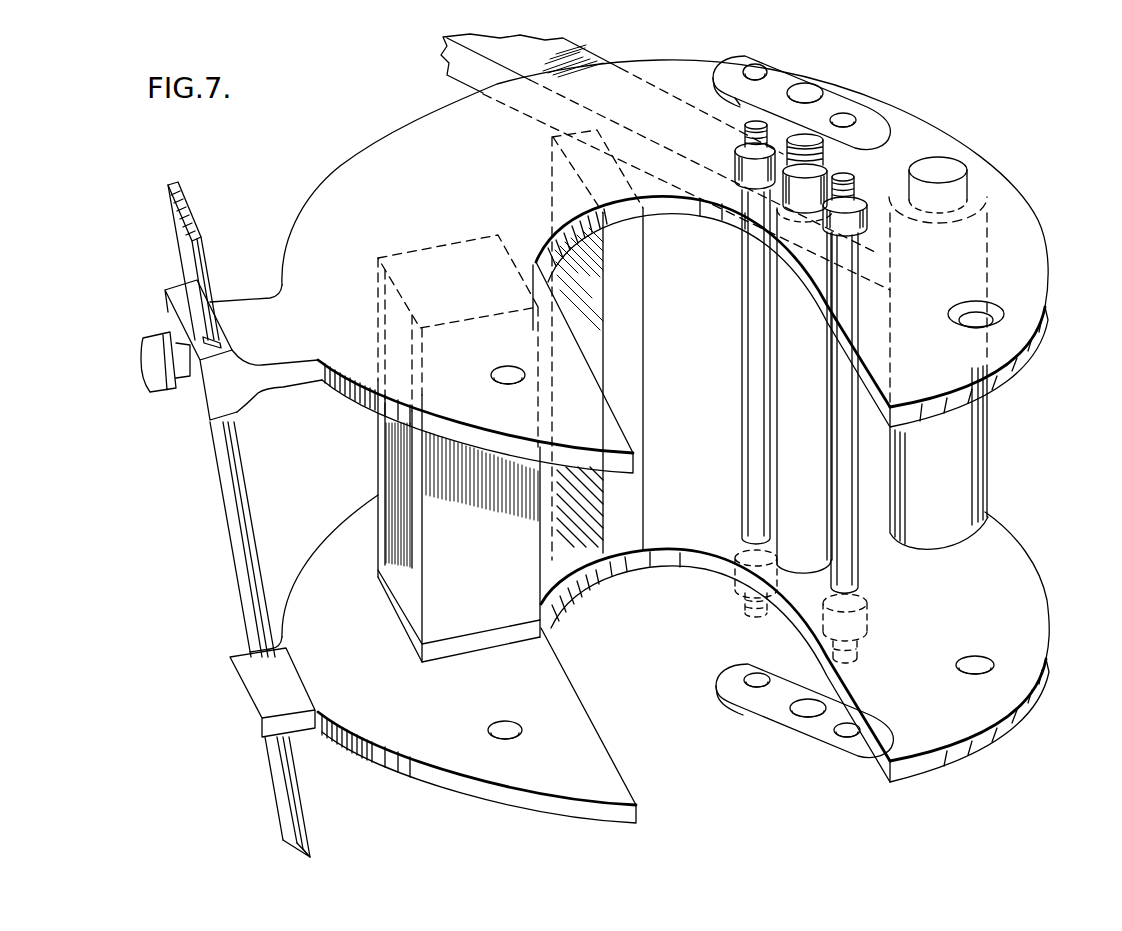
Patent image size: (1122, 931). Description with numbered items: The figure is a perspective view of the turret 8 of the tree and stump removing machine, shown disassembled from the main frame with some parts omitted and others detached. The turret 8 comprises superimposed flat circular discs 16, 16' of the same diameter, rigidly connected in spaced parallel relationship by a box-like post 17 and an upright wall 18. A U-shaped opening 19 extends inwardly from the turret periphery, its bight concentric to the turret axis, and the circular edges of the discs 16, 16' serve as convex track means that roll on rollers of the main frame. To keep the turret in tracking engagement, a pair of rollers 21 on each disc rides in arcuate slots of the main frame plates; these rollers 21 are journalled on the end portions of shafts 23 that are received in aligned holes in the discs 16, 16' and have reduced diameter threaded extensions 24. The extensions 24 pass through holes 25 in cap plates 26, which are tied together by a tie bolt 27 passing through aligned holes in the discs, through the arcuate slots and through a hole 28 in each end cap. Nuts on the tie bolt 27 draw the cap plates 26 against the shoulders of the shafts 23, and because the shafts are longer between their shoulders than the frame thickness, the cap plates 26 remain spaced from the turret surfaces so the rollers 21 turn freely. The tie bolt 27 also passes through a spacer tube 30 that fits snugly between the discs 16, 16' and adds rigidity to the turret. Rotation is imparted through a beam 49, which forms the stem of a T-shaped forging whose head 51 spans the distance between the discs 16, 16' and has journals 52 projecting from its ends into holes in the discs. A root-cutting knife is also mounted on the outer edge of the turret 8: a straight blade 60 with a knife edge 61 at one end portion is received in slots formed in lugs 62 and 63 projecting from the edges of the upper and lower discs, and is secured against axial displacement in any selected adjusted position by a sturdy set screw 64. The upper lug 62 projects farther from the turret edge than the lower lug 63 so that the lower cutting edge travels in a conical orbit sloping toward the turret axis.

The turret 8 is at (650, 266).
The upper flat circular disc 16 is at (650, 266).
The lower flat circular disc 16' is at (659, 659).
The box-like post 17 is at (481, 571).
The upright wall 18 is at (630, 318).
The U-shaped opening 19 is at (623, 570).
The rollers 21 is at (737, 168).
The shafts 23 is at (755, 372).
The reduced diameter threaded extensions 24 is at (747, 135).
The holes 25 is at (757, 64).
The cap plates 26 is at (872, 115).
The tie bolt 27 is at (805, 178).
The hole 28 is at (810, 83).
The spacer tube 30 is at (797, 453).
The beam 49 is at (592, 63).
The head 51 is at (955, 427).
The journals 52 is at (940, 178).
The straight blade 60 is at (277, 762).
The knife edge 61 is at (297, 806).
The upper lug 62 is at (218, 392).
The lower lug 63 is at (255, 688).
The set screw 64 is at (152, 363).